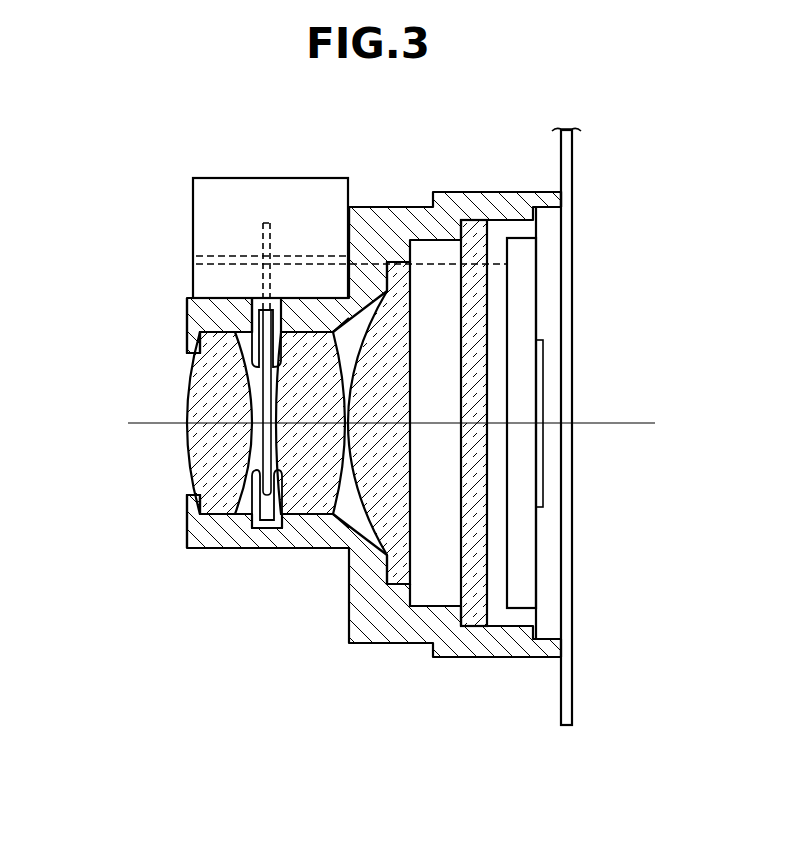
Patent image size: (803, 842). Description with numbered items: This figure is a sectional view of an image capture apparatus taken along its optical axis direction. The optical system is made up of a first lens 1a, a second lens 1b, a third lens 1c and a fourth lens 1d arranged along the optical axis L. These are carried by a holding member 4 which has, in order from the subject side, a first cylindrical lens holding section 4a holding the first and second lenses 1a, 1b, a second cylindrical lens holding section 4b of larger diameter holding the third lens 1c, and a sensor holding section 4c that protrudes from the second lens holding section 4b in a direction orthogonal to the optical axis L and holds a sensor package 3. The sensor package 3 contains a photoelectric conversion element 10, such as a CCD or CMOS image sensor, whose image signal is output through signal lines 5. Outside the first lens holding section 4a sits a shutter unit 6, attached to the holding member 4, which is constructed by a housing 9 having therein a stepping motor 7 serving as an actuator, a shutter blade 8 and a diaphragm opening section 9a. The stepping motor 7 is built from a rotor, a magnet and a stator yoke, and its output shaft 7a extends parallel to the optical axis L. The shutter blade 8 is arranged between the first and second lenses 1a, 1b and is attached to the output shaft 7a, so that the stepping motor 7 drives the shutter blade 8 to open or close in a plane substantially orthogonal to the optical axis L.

The first lens 1a is at (213, 505).
The second lens 1b is at (312, 495).
The third lens 1c is at (400, 568).
The fourth lens 1d is at (473, 617).
The sensor package 3 is at (548, 303).
The holding member 4 is at (415, 203).
The first cylindrical lens holding section 4a is at (203, 318).
The second cylindrical lens holding section 4b is at (358, 203).
The sensor holding section 4c is at (493, 200).
The signal lines 5 is at (572, 157).
The shutter unit 6 is at (207, 280).
The stepping motor 7 is at (240, 197).
The output shaft 7a is at (197, 263).
The shutter blade 8 is at (262, 400).
The housing 9 is at (279, 512).
The diaphragm opening section 9a is at (257, 525).
The photoelectric conversion element 10 is at (543, 368).
The optical axis L is at (148, 428).